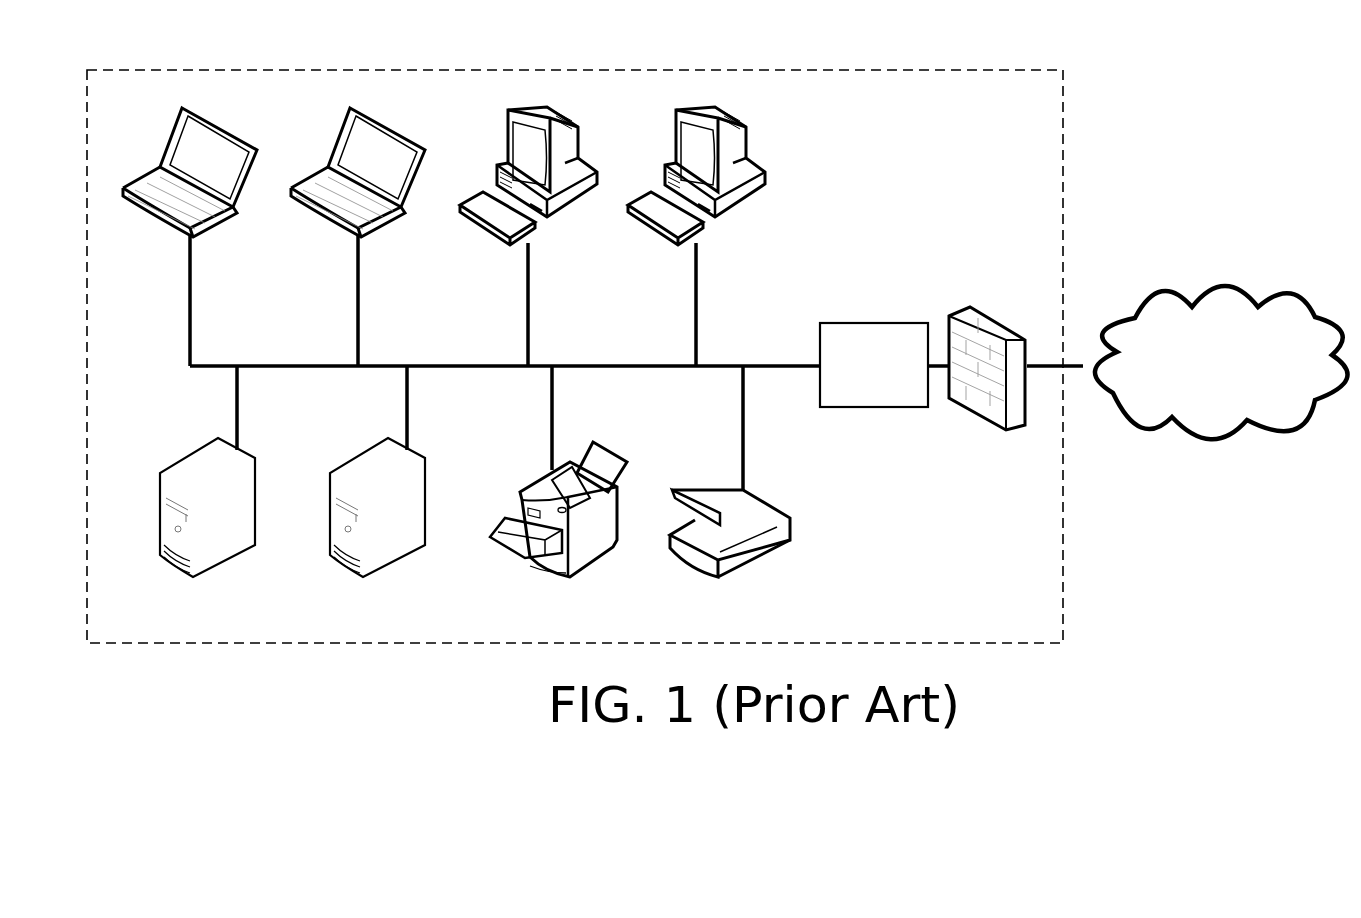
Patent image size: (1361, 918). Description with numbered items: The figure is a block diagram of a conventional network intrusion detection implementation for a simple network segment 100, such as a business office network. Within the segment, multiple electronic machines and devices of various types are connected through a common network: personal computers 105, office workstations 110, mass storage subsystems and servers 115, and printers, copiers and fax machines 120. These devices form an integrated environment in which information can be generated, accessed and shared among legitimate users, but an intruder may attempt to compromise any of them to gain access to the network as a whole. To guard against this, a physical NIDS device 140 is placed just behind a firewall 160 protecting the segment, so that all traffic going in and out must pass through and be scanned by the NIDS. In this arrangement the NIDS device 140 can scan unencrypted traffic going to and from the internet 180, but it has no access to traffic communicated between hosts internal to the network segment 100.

The network segment 100 is at (986, 70).
The personal computers 105 is at (274, 230).
The office workstations 110 is at (612, 230).
The mass storage subsystems and servers 115 is at (292, 490).
The printers/copiers/fax machines 120 is at (640, 490).
The NIDS device 140 is at (874, 391).
The firewall 160 is at (987, 392).
The internet 180 is at (1221, 387).